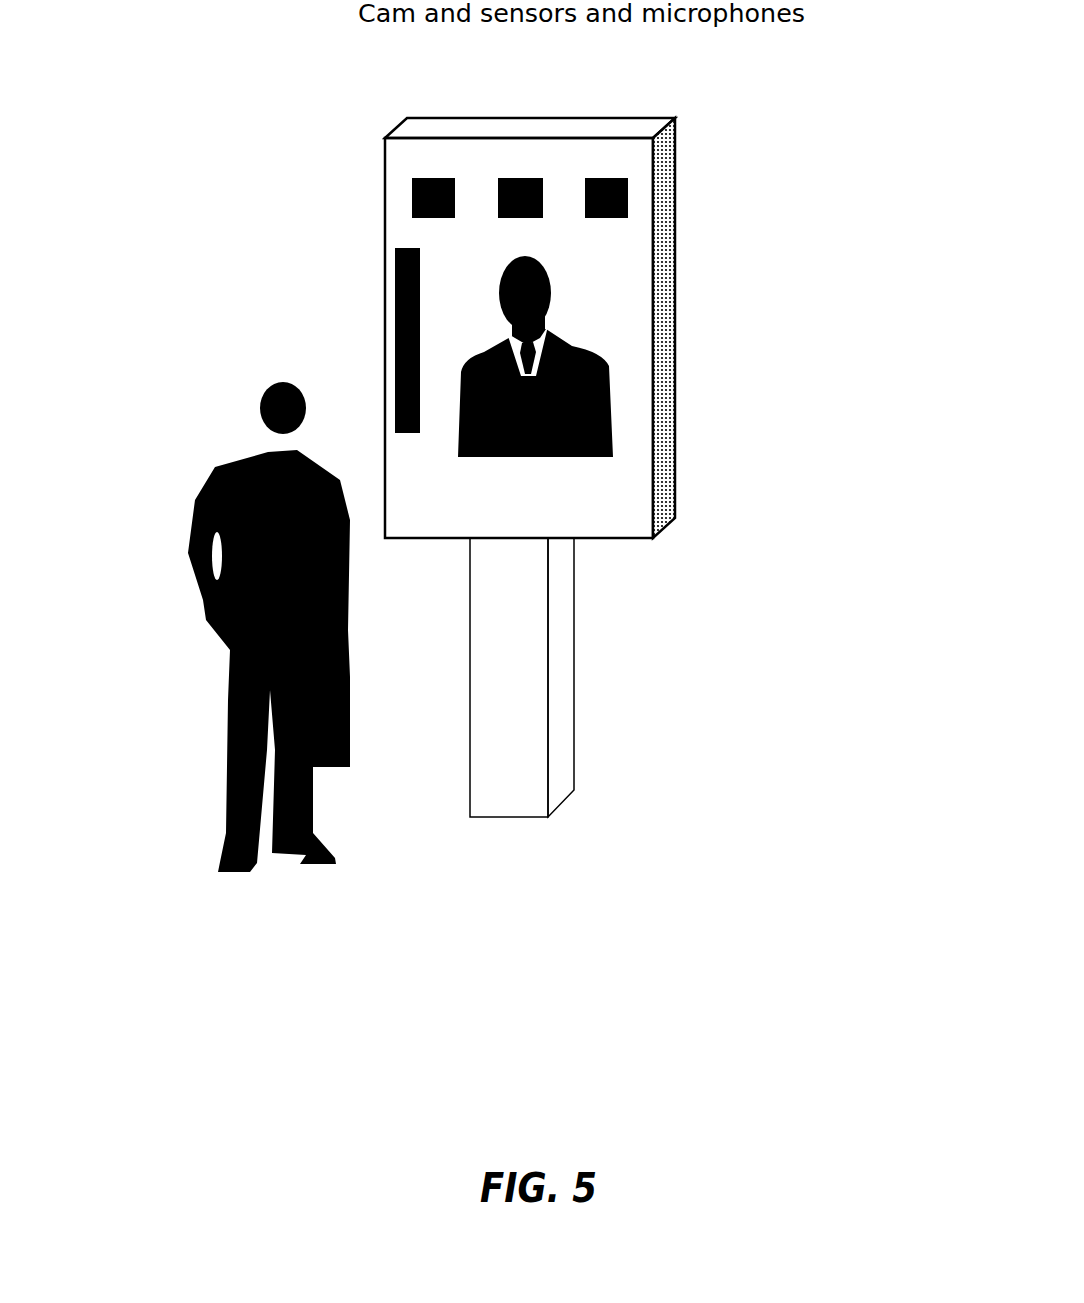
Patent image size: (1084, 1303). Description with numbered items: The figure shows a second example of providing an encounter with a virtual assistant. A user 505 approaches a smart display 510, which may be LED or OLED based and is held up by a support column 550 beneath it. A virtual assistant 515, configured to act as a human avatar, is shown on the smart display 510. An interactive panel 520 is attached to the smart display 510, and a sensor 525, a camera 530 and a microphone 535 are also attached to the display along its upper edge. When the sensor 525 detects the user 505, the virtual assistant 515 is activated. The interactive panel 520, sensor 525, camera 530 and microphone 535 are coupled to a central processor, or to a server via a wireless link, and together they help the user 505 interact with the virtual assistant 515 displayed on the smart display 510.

The user 505 is at (218, 885).
The smart display 510 is at (652, 357).
The virtual assistant 515 is at (515, 472).
The interactive panel 520 is at (390, 253).
The sensor 525 is at (422, 172).
The camera 530 is at (515, 176).
The microphone 535 is at (603, 173).
The support column 550 is at (574, 722).